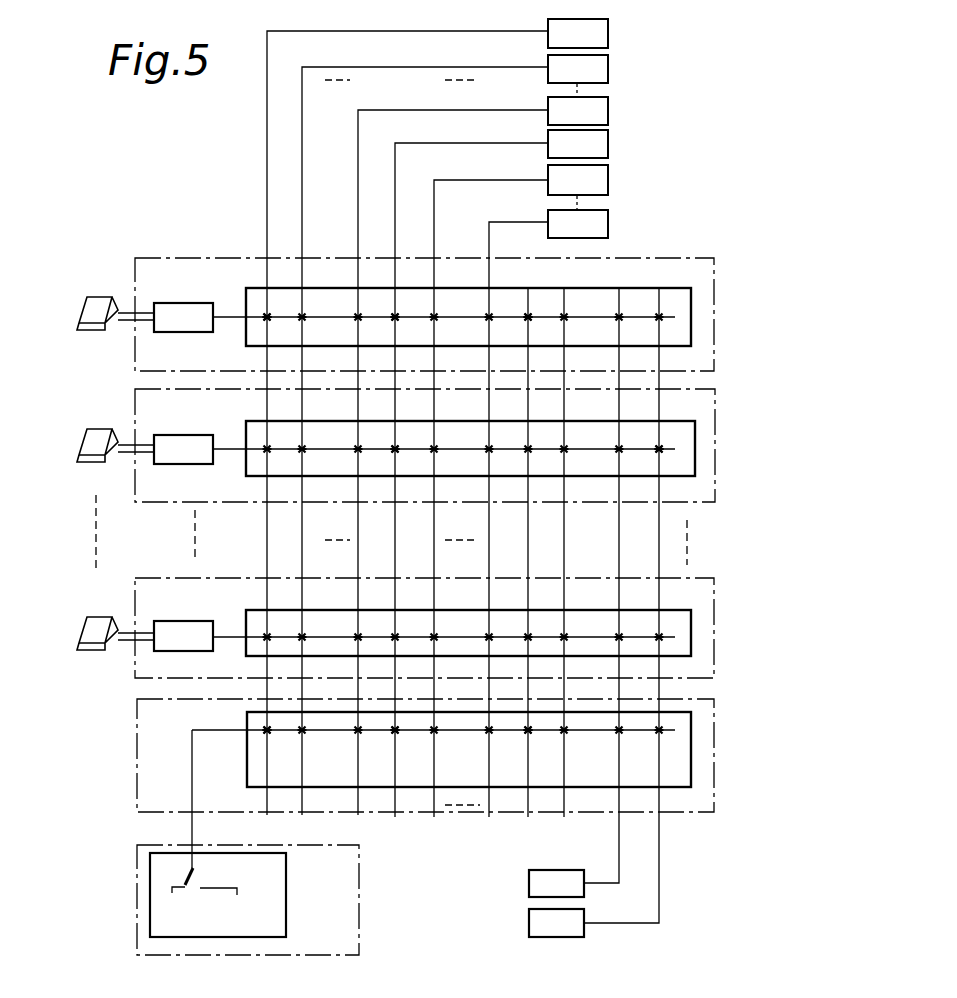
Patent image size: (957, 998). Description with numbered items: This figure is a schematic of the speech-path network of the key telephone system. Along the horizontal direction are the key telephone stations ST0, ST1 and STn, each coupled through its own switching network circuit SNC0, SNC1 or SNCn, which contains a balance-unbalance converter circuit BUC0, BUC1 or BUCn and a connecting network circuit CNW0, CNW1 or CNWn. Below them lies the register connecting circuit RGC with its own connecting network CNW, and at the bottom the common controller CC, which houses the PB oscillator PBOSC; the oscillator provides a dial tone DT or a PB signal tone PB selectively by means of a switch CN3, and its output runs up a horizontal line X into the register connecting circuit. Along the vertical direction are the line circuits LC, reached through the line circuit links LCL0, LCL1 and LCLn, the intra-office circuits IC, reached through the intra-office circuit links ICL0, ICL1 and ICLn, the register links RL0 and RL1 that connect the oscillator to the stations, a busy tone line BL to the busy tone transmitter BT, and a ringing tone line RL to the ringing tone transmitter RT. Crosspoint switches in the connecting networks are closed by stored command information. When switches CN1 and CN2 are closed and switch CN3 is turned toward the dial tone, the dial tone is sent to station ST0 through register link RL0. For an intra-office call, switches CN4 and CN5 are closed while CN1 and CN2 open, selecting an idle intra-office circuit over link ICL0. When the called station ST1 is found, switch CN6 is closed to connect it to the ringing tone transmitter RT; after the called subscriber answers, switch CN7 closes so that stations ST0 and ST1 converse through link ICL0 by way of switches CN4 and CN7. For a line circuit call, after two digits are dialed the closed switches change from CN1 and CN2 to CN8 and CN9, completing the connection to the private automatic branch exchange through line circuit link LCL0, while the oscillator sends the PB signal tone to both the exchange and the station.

The line circuit LC is at (578, 72).
The intra-office circuit IC is at (578, 184).
The line circuit link LCL0 is at (388, 438).
The line circuit link LCL1 is at (415, 453).
The line circuit link LCLn is at (441, 476).
The intra-office circuit link ICL0 is at (465, 508).
The intra-office circuit link ICL1 is at (480, 514).
The intra-office circuit link ICLn is at (507, 533).
The register link RL0 is at (536, 568).
The register link RL1 is at (583, 567).
The busy tone line BL is at (616, 585).
The ringing tone line RL is at (637, 605).
The switching network circuit SNC0 is at (170, 258).
The switching network circuit SNC1 is at (135, 412).
The switching network circuit SNCn is at (135, 603).
The key telephone station ST0 is at (92, 315).
The key telephone station ST1 is at (92, 447).
The key telephone station STn is at (92, 634).
The balance-unbalance converter circuit BUC0 is at (183, 318).
The balance-unbalance converter circuit BUC1 is at (183, 450).
The balance-unbalance converter circuit BUCn is at (183, 636).
The connecting network circuit CNW0 is at (691, 338).
The connecting network circuit CNW1 is at (695, 468).
The connecting network circuit CNWn is at (691, 648).
The connecting network CNW is at (691, 778).
The switch CN1 is at (529, 320).
The switch CN2 is at (529, 733).
The switch CN3 is at (194, 879).
The switch CN4 is at (396, 320).
The switch CN5 is at (396, 733).
The switch CN6 is at (662, 449).
The switch CN7 is at (396, 452).
The switch CN8 is at (268, 320).
The switch CN9 is at (268, 733).
The register connecting circuit RGC is at (137, 766).
The horizontal line X is at (191, 835).
The common controller CC is at (137, 923).
The PB oscillator PBOSC is at (286, 908).
The PB signal tone PB is at (170, 905).
The dial tone DT is at (226, 905).
The busy tone transmitter BT is at (556, 883).
The ringing tone transmitter RT is at (556, 923).